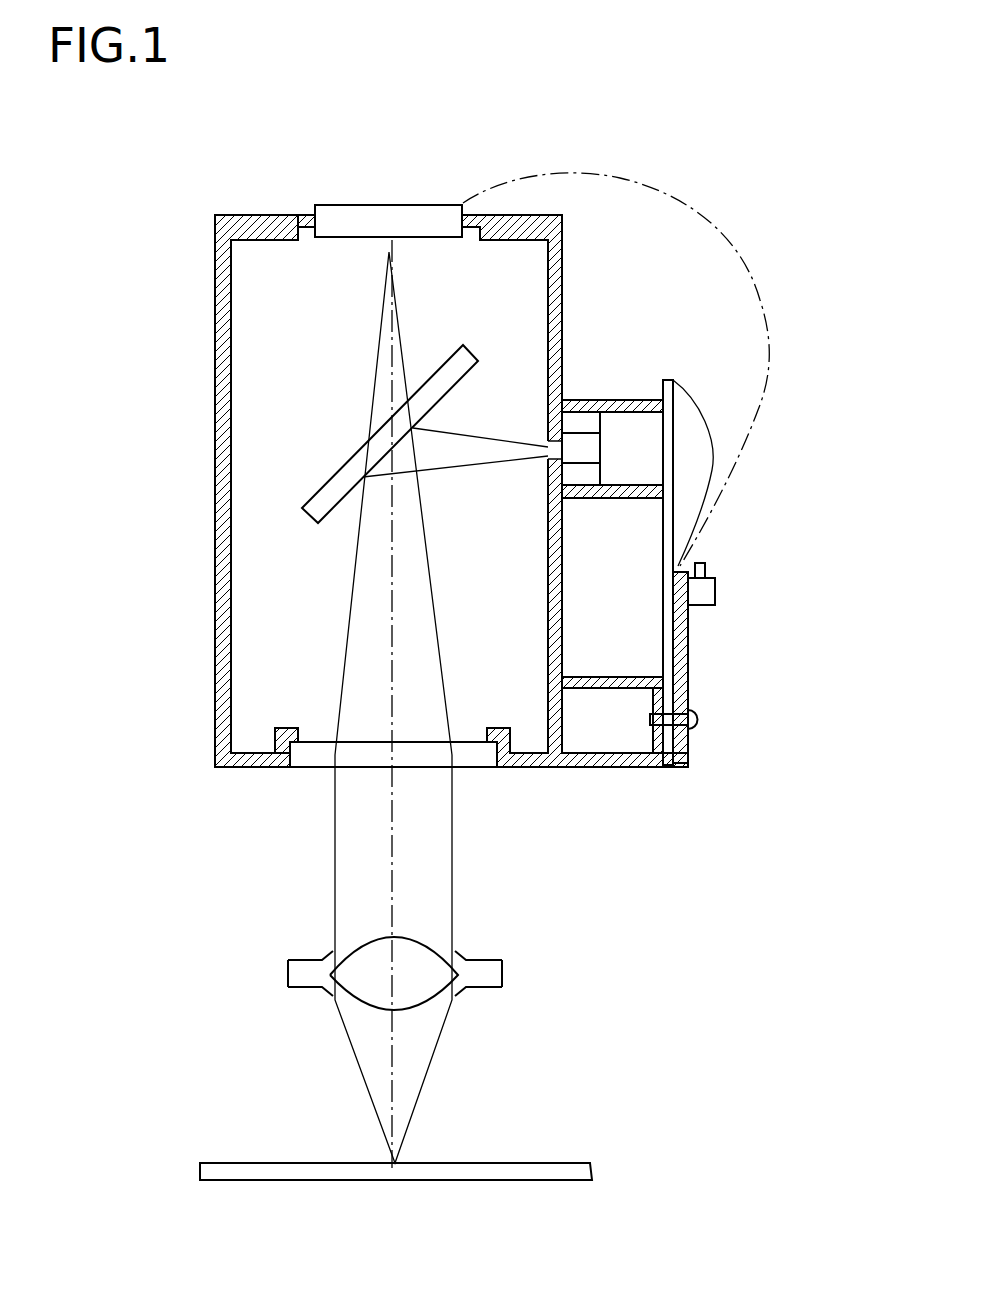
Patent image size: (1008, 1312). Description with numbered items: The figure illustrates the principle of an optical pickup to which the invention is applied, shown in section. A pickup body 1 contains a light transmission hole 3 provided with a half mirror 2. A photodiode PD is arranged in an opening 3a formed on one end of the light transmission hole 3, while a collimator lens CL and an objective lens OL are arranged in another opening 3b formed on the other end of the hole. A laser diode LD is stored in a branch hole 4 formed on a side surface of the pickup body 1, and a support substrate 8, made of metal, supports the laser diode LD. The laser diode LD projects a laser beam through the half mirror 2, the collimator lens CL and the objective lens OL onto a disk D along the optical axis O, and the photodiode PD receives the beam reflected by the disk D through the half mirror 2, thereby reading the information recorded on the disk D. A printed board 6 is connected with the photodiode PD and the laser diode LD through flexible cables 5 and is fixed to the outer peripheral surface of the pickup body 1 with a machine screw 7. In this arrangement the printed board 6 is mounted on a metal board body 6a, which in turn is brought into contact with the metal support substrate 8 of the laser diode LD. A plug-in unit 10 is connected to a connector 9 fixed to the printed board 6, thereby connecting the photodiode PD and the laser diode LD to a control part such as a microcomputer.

The pickup body 1 is at (218, 468).
The half mirror 2 is at (322, 477).
The light transmission hole 3 is at (247, 548).
The opening 3a is at (305, 240).
The opening 3b is at (302, 728).
The branch hole 4 is at (548, 475).
The flexible cables 5 is at (715, 407).
The printed board 6 is at (712, 683).
The metal board body 6a is at (673, 632).
The machine screw 7 is at (698, 718).
The support substrate 8 is at (667, 538).
The connector 9 is at (712, 593).
The plug-in unit 10 is at (708, 572).
The photodiode PD is at (388, 217).
The laser diode LD is at (630, 402).
The collimator lens CL is at (305, 757).
The objective lens OL is at (477, 972).
The optical axis O is at (400, 853).
The disk D is at (530, 1163).